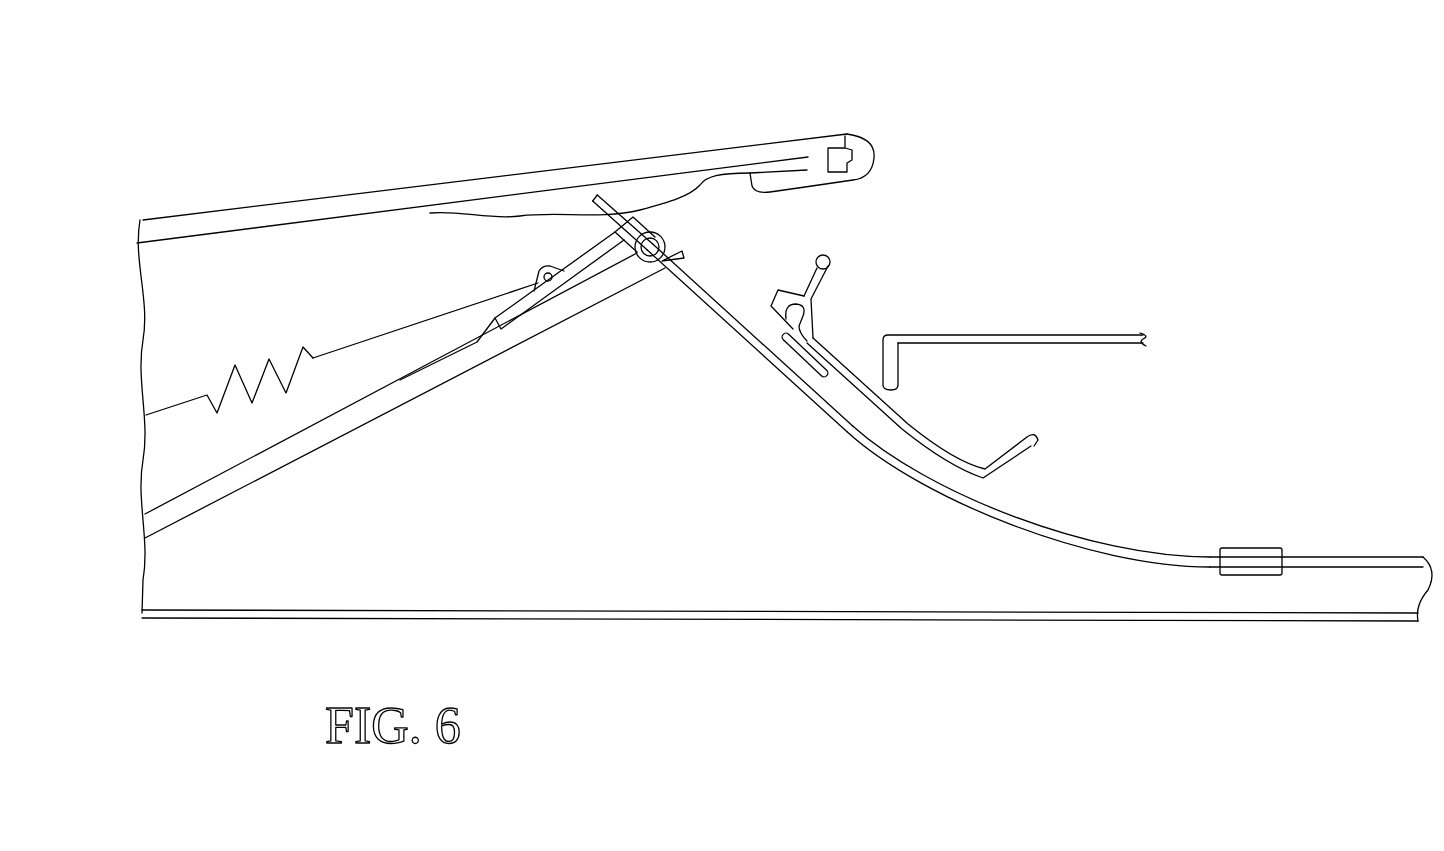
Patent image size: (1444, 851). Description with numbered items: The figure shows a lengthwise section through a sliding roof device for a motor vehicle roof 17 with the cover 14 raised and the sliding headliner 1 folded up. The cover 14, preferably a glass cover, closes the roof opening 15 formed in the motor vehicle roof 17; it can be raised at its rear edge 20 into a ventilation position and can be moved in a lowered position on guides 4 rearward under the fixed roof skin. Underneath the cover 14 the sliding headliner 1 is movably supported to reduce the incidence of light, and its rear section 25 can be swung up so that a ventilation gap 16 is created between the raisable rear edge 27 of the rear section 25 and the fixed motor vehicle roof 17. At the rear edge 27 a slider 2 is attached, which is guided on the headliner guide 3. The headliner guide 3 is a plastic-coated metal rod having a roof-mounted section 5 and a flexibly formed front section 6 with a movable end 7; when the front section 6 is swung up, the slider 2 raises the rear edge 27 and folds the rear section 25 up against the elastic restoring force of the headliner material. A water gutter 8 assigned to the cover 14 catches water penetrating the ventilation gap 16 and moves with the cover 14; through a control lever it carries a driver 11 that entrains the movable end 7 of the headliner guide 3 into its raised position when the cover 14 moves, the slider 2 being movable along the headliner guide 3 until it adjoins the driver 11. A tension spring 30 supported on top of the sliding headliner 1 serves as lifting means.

The sliding headliner 1 is at (513, 303).
The slider 2 is at (686, 143).
The headliner guide 3 is at (1095, 540).
The guides 4 is at (1040, 614).
The roof-mounted section 5 is at (1340, 556).
The front section 6 is at (1039, 432).
The movable end 7 is at (595, 198).
The water gutter 8 is at (928, 432).
The driver 11 is at (667, 205).
The cover 14 is at (558, 180).
The roof opening 15 is at (610, 431).
The ventilation gap 16 is at (787, 250).
The motor vehicle roof 17 is at (1073, 335).
The rear edge 20 is at (876, 130).
The rear section 25 is at (405, 398).
The rear edge 27 is at (668, 285).
The tension spring 30 is at (246, 352).